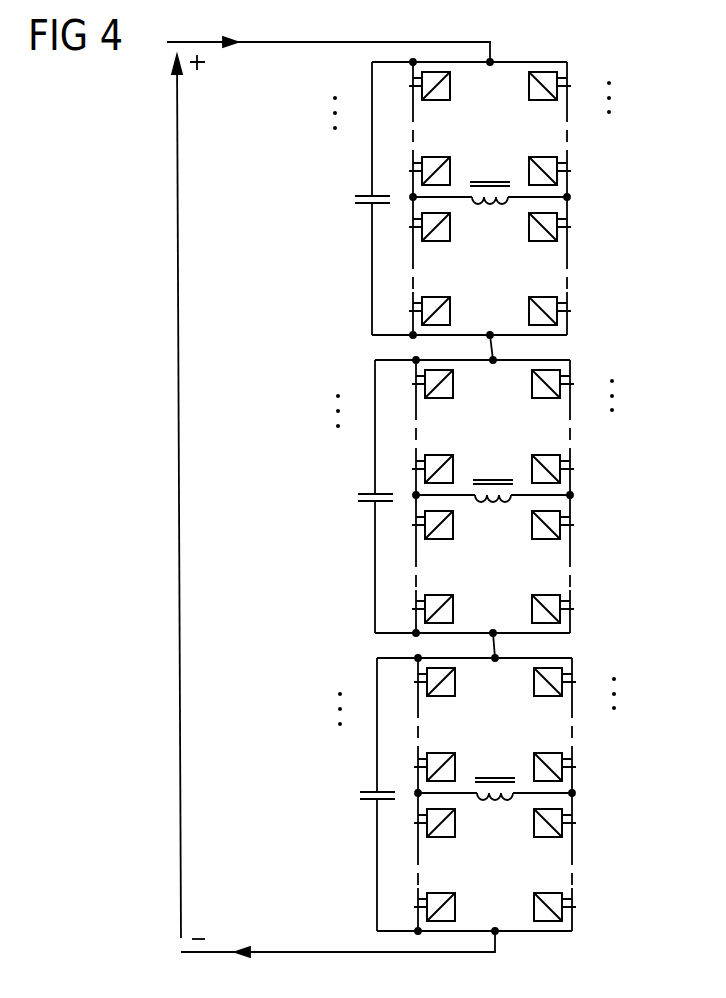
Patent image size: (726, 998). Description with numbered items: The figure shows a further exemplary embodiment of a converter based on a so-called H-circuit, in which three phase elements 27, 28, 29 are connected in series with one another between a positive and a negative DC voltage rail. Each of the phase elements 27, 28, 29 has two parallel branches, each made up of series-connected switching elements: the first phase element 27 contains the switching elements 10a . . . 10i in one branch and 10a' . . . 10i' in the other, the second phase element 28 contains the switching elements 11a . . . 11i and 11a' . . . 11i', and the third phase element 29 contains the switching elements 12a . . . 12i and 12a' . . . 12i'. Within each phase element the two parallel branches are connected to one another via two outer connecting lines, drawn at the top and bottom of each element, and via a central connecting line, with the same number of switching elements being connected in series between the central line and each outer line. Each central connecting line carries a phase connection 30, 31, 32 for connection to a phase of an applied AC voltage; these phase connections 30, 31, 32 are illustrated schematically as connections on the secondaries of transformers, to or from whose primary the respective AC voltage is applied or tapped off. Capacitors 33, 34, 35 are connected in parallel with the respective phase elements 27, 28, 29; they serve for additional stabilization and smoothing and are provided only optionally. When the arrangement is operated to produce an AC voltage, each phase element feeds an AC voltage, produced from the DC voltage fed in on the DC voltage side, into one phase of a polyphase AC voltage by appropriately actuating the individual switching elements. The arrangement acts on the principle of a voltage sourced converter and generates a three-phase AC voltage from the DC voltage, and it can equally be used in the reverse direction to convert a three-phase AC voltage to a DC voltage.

The switching element 10a is at (385, 80).
The switching element 10a' is at (582, 73).
The switching element 10i is at (388, 307).
The switching element 10i' is at (577, 299).
The switching element 11a is at (388, 378).
The switching element 11a' is at (585, 371).
The switching element 11i is at (391, 605).
The switching element 11i' is at (580, 597).
The switching element 12a is at (390, 676).
The switching element 12a' is at (587, 669).
The switching element 12i is at (393, 903).
The switching element 12i' is at (583, 896).
The phase element 27 is at (586, 243).
The phase element 28 is at (589, 541).
The phase element 29 is at (591, 839).
The phase connection 30 is at (489, 166).
The phase connection 31 is at (492, 464).
The phase connection 32 is at (494, 762).
The capacitor 33 is at (356, 197).
The capacitor 34 is at (359, 495).
The capacitor 35 is at (361, 793).